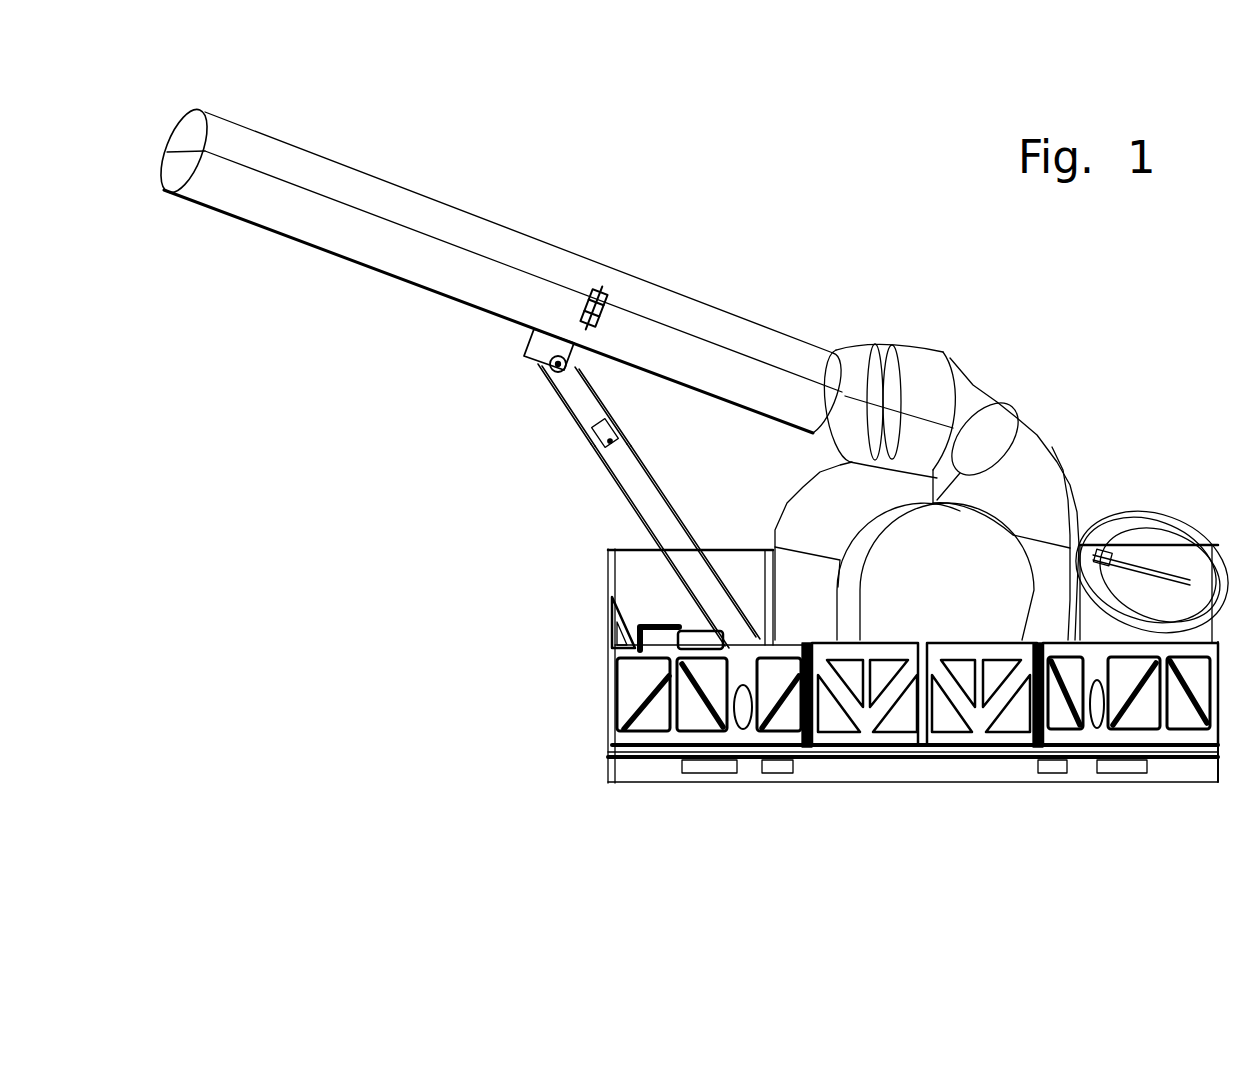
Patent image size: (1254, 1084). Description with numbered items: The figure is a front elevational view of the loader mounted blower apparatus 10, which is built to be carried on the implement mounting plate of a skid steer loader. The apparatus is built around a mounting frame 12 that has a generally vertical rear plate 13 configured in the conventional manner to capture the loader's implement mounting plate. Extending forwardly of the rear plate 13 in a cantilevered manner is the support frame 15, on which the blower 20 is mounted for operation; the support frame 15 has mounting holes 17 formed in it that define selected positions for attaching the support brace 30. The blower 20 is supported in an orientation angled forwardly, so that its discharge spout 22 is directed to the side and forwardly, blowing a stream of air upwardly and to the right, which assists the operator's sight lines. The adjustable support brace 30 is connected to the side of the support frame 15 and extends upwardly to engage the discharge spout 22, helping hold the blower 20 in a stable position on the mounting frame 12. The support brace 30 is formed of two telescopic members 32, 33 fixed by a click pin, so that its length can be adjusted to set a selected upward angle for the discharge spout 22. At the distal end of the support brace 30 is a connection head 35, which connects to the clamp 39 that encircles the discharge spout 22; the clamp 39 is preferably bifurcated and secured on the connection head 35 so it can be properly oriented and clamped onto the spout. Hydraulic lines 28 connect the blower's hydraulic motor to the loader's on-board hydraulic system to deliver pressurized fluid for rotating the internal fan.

The blower apparatus 10 is at (943, 322).
The mounting frame 12 is at (620, 768).
The rear plate 13 is at (657, 597).
The support frame 15 is at (628, 703).
The mounting holes 17 is at (743, 730).
The blower 20 is at (1037, 500).
The discharge spout 22 is at (715, 327).
The hydraulic lines 28 is at (1157, 518).
The support brace 30 is at (540, 505).
The telescopic member 32 is at (660, 515).
The telescopic member 33 is at (567, 402).
The connection head 35 is at (530, 356).
The clamp 39 is at (600, 300).